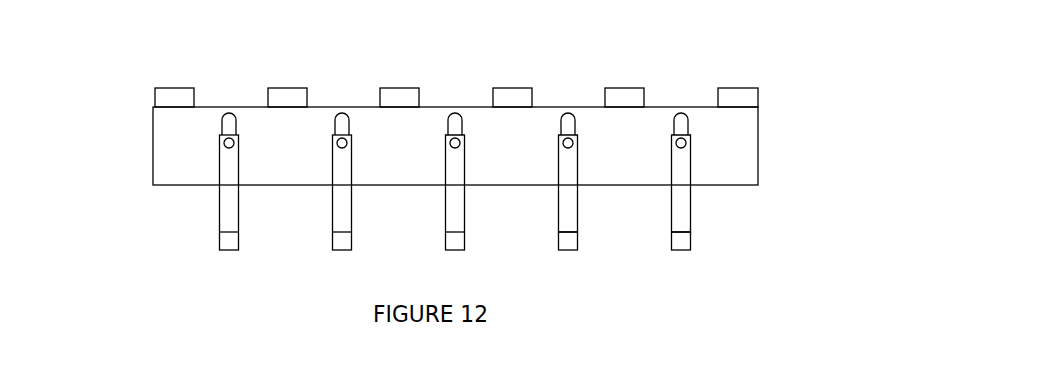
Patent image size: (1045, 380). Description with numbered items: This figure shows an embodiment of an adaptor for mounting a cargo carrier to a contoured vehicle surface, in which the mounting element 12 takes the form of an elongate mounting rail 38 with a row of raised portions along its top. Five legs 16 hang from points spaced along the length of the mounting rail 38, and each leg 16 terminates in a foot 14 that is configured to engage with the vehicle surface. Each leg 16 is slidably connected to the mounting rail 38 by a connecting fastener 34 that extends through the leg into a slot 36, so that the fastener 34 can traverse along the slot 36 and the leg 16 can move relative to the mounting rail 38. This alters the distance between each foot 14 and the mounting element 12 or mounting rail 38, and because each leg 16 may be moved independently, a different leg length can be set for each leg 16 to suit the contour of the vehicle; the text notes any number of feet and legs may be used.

The mounting element 12 is at (176, 125).
The mounting rail 38 is at (410, 97).
The leg 16 is at (455, 214).
The foot 14 is at (455, 240).
The slot 36 is at (568, 122).
The connecting fastener 34 is at (697, 146).